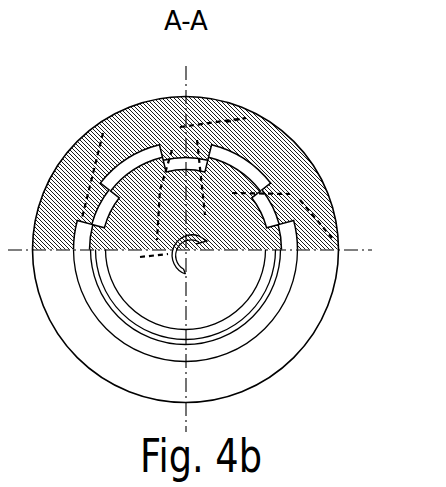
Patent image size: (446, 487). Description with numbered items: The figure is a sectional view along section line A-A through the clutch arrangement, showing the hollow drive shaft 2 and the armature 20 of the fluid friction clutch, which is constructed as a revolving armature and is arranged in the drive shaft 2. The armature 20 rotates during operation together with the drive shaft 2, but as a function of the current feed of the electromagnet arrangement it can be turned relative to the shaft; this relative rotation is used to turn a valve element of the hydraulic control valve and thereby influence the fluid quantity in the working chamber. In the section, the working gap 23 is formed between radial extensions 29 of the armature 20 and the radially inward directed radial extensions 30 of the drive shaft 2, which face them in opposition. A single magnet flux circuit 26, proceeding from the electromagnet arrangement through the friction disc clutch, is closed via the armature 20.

The drive shaft 2 is at (263, 147).
The armature 20 is at (226, 290).
The working gap 23 is at (171, 150).
The magnet flux circuit 26 is at (231, 118).
The radial extensions of the armature 29 is at (110, 128).
The radial extensions of the drive shaft 30 is at (200, 127).